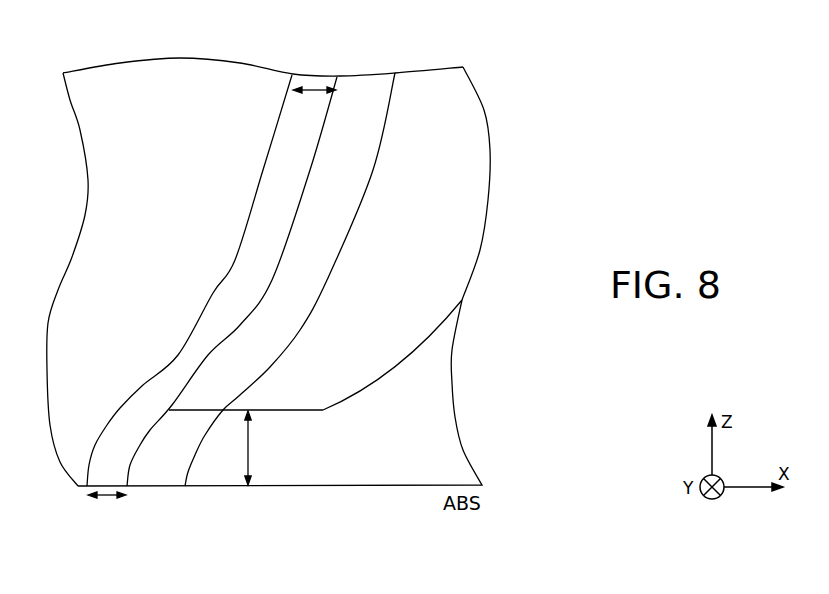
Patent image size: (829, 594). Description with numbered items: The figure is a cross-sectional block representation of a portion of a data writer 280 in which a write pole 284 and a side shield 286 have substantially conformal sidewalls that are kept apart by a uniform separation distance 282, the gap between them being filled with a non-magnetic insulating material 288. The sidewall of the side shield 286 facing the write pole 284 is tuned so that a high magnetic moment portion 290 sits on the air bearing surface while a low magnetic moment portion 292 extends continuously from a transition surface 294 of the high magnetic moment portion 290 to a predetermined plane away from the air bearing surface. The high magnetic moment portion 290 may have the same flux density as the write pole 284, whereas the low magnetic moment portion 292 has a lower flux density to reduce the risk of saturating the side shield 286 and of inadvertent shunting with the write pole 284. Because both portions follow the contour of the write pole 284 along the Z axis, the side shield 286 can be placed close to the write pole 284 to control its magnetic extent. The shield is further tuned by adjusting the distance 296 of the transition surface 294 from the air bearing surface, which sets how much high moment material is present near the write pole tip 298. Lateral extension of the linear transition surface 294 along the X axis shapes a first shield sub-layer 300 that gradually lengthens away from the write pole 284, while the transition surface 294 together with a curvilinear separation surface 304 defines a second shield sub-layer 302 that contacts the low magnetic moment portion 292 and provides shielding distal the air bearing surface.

The data writer 280 is at (128, 43).
The uniform separation distance 282 is at (211, 306).
The write pole 284 is at (166, 93).
The side shield 286 is at (451, 272).
The non-magnetic insulating material 288 is at (235, 281).
The high magnetic moment portion 290 is at (148, 459).
The low magnetic moment portion 292 is at (346, 114).
The transition surface 294 is at (207, 409).
The distance 296 is at (266, 448).
The write pole tip 298 is at (77, 467).
The first shield sub-layer 300 is at (430, 479).
The second shield sub-layer 302 is at (425, 103).
The curvilinear separation surface 304 is at (405, 359).